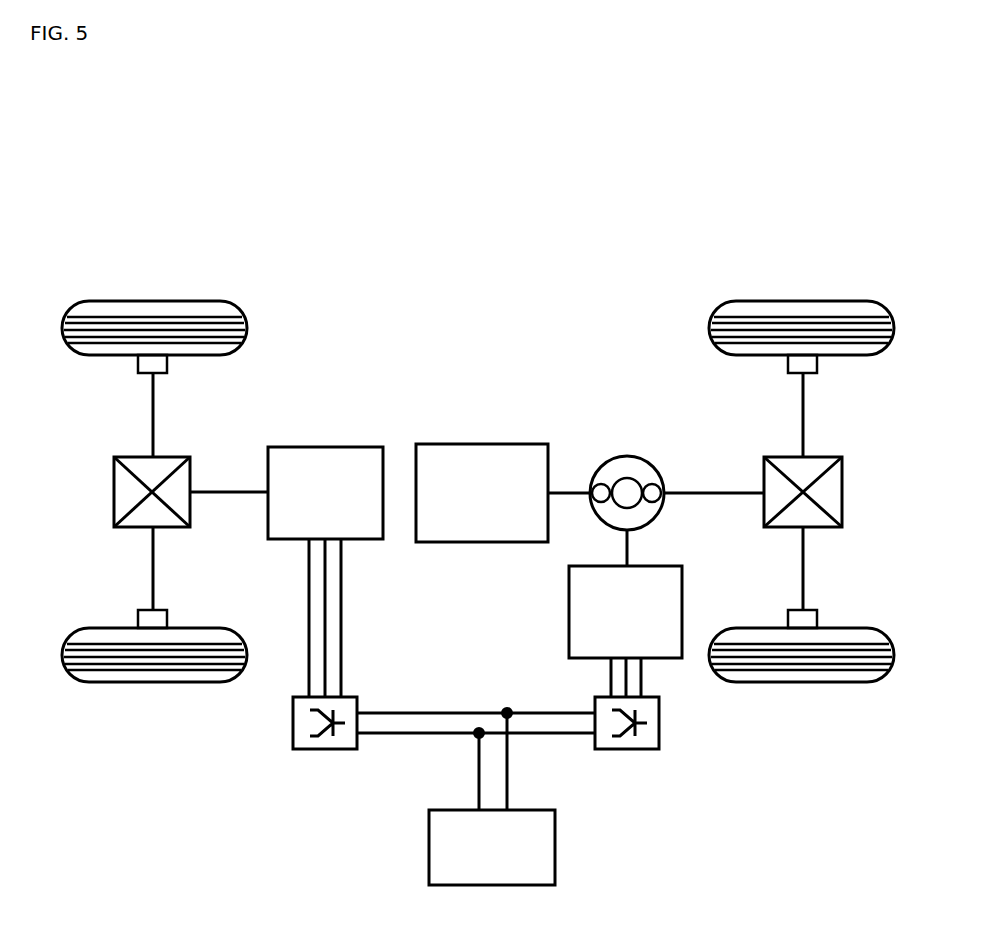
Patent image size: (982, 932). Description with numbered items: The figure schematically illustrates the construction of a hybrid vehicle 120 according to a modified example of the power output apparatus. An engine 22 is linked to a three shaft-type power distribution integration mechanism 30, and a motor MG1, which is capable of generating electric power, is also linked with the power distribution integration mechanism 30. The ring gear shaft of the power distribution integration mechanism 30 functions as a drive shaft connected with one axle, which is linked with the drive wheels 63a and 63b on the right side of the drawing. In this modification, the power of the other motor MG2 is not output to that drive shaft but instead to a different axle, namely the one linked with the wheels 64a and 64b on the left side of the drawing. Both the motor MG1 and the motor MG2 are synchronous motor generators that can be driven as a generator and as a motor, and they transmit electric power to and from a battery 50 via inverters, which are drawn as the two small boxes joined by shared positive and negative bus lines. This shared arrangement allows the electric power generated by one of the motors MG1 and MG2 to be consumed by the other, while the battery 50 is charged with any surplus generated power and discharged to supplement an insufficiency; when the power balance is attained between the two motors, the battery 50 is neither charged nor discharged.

The hybrid vehicle 120 is at (482, 271).
The wheel 64a is at (153, 300).
The wheel 64b is at (153, 684).
The drive wheel 63a is at (804, 300).
The drive wheel 63b is at (803, 684).
The motor MG2 is at (323, 447).
The motor MG1 is at (569, 612).
The engine 22 is at (482, 444).
The power distribution integration mechanism 30 is at (626, 456).
The battery 50 is at (555, 847).